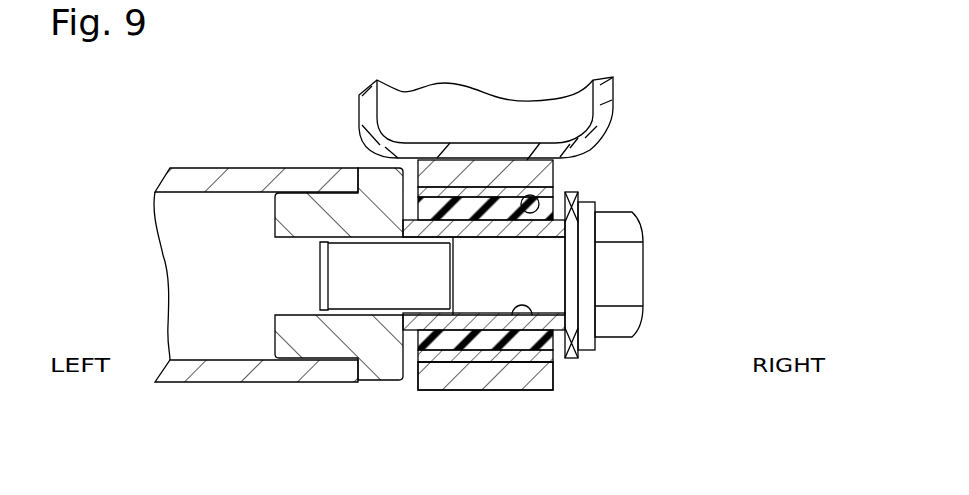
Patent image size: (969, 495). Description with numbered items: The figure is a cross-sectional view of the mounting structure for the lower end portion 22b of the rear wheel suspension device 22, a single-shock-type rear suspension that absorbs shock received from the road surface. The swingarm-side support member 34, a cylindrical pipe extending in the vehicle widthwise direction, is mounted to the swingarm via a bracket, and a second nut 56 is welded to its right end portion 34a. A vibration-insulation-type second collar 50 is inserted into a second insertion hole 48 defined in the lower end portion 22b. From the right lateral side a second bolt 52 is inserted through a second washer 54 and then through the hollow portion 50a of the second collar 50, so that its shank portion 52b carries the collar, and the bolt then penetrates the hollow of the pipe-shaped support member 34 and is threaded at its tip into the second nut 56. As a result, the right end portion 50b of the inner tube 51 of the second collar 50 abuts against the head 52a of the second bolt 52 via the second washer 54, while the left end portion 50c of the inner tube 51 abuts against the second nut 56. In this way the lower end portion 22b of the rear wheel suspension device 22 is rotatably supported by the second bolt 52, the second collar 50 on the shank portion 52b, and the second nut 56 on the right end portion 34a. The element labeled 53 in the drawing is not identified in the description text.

The rear wheel suspension device 22 is at (607, 100).
The lower end portion 22b is at (493, 383).
The swingarm-side support member 34 is at (220, 386).
The right end portion 34a is at (340, 178).
The second insertion hole 48 is at (548, 208).
The second collar 50 is at (463, 364).
The hollow portion 50a is at (547, 360).
The right end portion 50b is at (557, 328).
The left end portion 50c is at (405, 318).
The inner tube 51 is at (440, 322).
The second bolt 52 is at (646, 217).
The head 52a is at (620, 289).
The shank portion 52b is at (543, 262).
The washer 53 is at (547, 358).
The second washer 54 is at (577, 194).
The second nut 56 is at (293, 213).